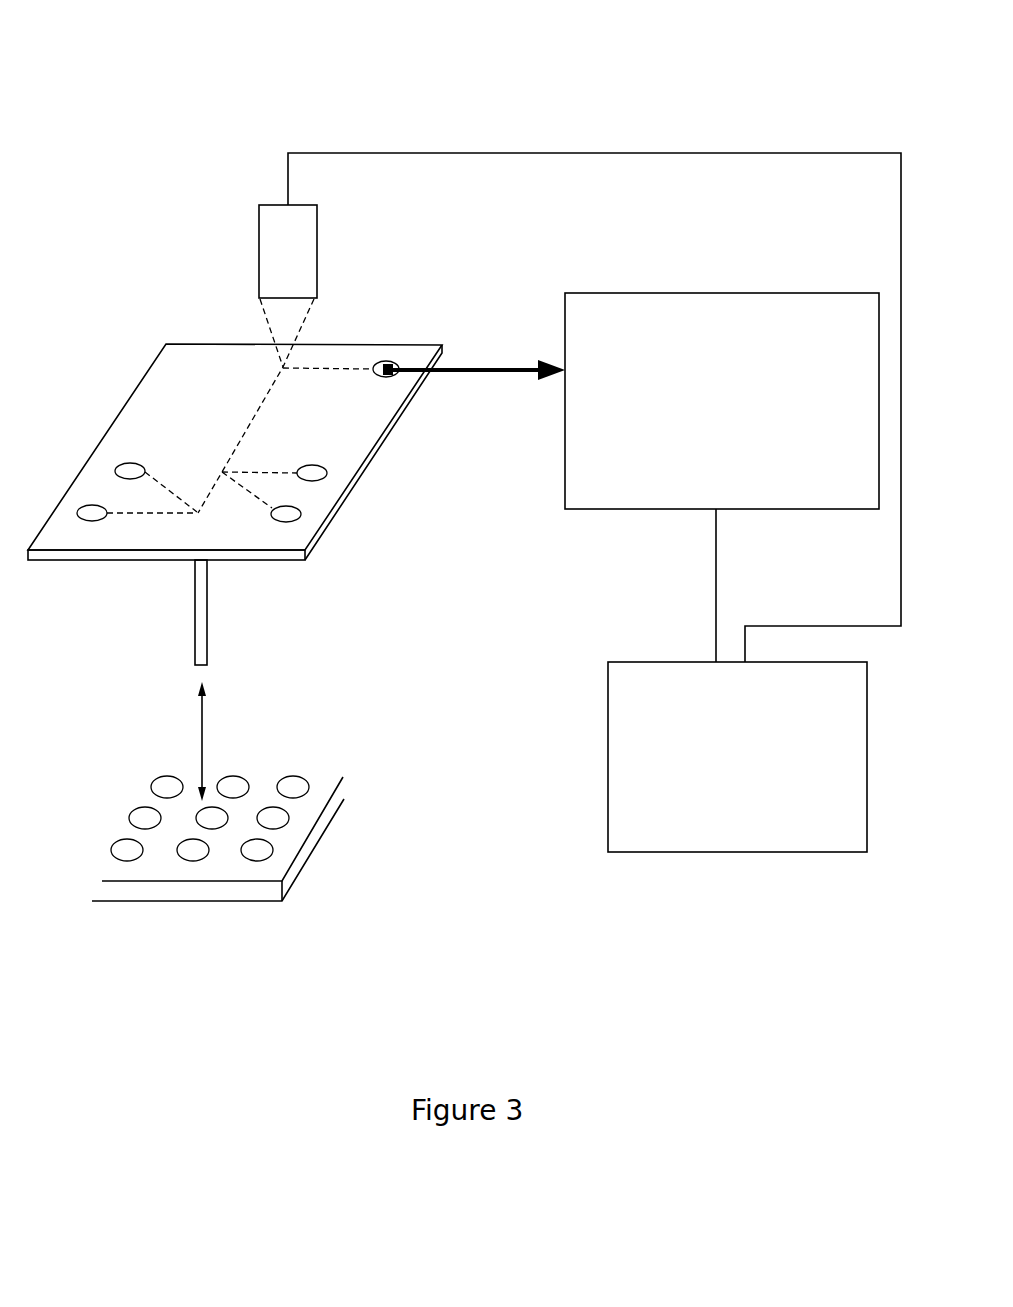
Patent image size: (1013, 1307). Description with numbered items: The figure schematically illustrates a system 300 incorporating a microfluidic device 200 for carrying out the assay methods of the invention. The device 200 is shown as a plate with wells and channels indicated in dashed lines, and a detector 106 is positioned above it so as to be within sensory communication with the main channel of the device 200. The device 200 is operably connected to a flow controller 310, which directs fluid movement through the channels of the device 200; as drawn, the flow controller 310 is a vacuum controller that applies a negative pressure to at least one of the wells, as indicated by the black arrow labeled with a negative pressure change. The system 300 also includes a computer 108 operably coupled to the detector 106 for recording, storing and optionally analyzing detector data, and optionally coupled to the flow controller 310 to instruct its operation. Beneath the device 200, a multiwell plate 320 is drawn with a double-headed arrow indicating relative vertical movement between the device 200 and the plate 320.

The system 300 is at (130, 92).
The detector 106 is at (285, 359).
The microfluidic device 200 is at (88, 477).
The flow controller 310 is at (634, 401).
The computer 108 is at (737, 757).
The microwell plate 320 is at (302, 863).